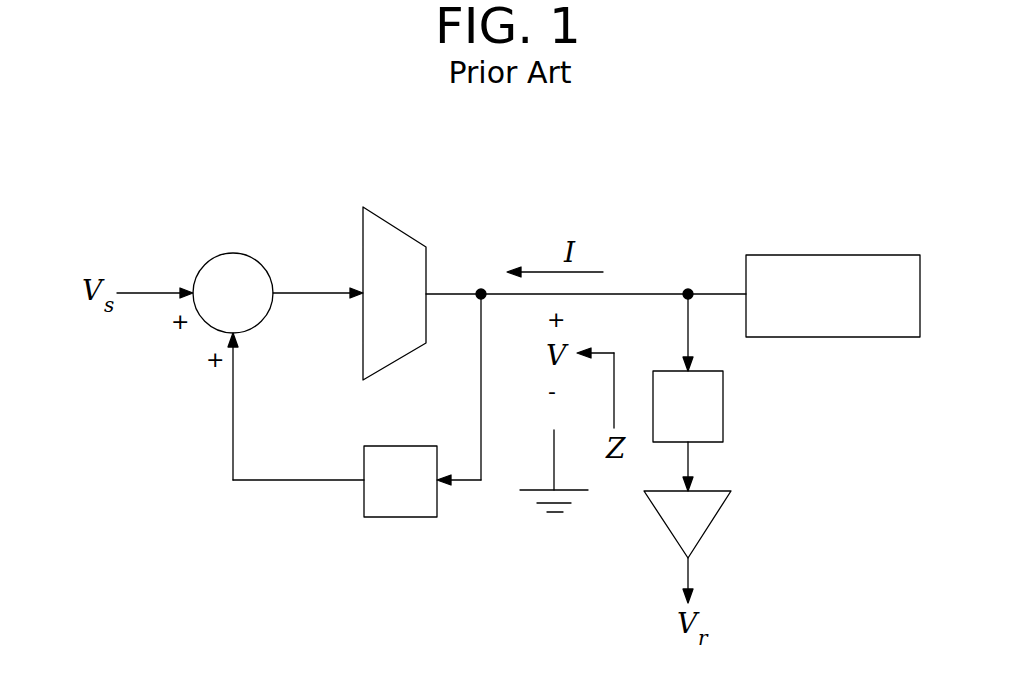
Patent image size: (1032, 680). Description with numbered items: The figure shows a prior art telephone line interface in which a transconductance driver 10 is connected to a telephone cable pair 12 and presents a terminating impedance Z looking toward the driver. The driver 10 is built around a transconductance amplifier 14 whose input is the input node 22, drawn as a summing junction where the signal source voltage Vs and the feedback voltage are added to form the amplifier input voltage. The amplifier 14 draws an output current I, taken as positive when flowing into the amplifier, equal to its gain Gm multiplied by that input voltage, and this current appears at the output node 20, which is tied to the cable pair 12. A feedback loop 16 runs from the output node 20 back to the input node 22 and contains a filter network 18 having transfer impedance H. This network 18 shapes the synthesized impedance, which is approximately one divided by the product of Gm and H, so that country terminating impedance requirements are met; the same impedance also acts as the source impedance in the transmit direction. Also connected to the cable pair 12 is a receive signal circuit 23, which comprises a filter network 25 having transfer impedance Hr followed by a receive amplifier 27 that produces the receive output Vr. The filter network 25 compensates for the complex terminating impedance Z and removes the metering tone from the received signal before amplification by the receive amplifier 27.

The transconductance driver 10 is at (228, 208).
The telephone cable pair 12 is at (822, 255).
The transconductance amplifier 14 is at (392, 224).
The feedback loop 16 is at (481, 410).
The filter network 18 is at (334, 456).
The output node 20 is at (478, 289).
The input node 22 is at (257, 259).
The receive signal circuit 23 is at (662, 330).
The filter network 25 is at (723, 413).
The receive amplifier 27 is at (706, 535).